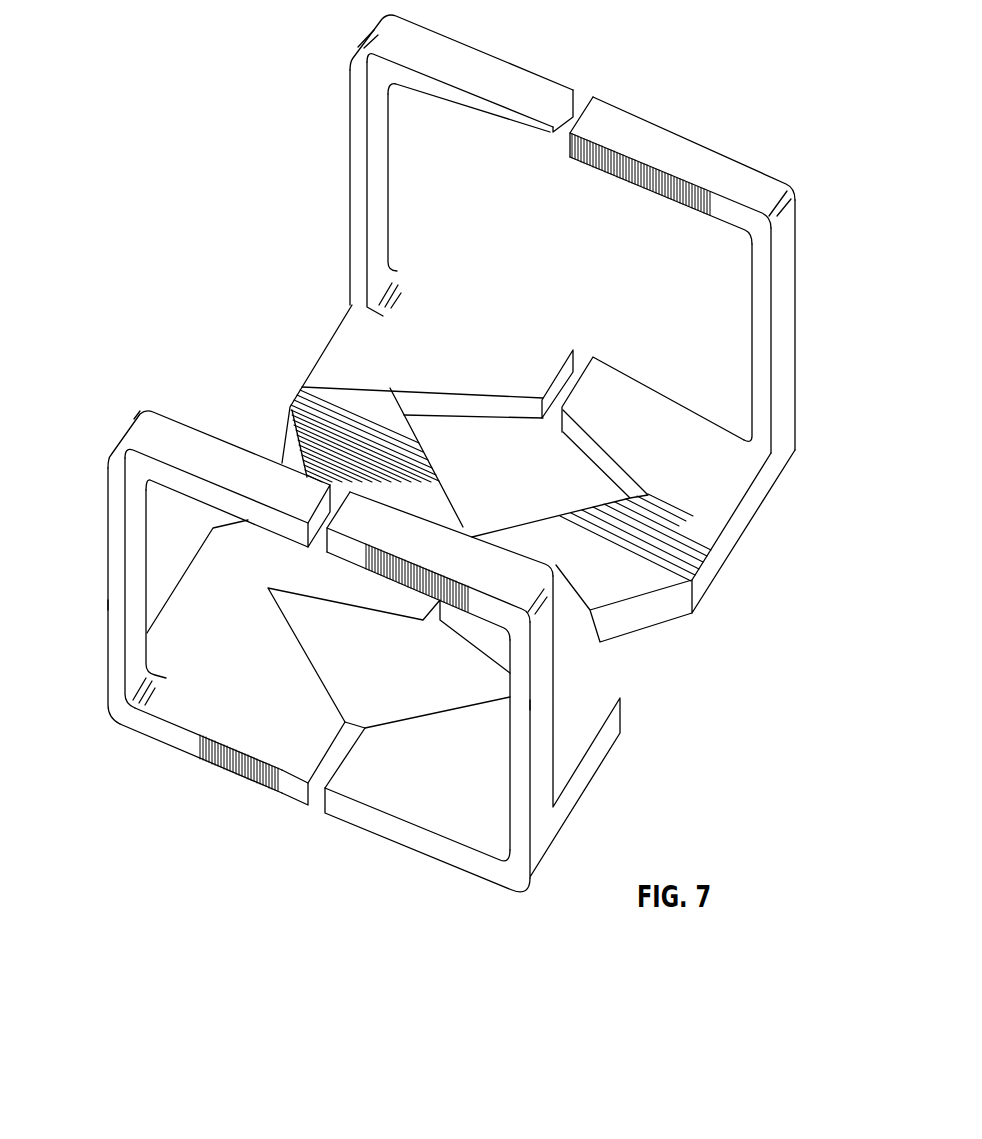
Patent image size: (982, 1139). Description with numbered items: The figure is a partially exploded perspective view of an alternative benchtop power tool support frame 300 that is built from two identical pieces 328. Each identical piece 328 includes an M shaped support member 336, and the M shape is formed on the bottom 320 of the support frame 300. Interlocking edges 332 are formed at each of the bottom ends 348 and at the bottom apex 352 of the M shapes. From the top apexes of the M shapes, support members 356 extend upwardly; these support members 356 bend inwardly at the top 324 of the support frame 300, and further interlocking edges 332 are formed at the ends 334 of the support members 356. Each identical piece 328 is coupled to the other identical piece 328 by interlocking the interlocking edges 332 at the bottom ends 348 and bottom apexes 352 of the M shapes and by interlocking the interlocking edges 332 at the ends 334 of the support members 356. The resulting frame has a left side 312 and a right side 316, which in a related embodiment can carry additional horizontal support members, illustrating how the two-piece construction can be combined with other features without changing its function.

The support frame 300 is at (121, 220).
The left side 312 is at (157, 383).
The right side 316 is at (728, 588).
The bottom 320 is at (302, 834).
The top 324 is at (612, 78).
The identical piece 328 is at (92, 674).
The interlocking edges 332 is at (563, 135).
The ends of the support members 334 is at (507, 97).
The M shaped support member 336 is at (180, 685).
The bottom ends 348 is at (622, 380).
The bottom apex 352 is at (418, 497).
The support members 356 is at (373, 192).